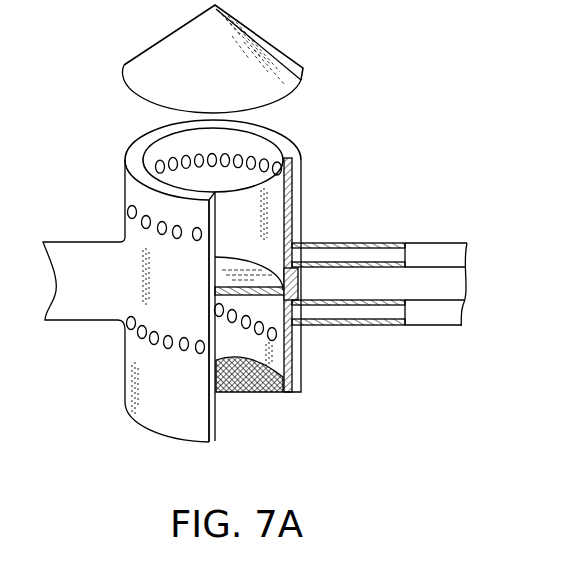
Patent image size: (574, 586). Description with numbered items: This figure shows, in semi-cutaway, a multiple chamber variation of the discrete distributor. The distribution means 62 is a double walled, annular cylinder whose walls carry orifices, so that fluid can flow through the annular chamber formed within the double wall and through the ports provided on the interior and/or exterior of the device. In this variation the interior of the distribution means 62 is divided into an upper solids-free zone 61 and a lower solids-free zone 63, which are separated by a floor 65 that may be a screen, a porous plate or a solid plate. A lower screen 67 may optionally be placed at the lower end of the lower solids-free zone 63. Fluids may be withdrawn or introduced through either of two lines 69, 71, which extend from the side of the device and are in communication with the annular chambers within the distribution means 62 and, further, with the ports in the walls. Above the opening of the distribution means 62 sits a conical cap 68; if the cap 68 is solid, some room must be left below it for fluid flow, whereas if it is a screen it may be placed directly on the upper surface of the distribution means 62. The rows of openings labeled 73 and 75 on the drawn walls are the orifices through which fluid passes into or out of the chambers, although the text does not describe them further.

The upper solids-free zone 61 is at (259, 228).
The distribution means 62 is at (342, 176).
The lower solids-free zone 63 is at (265, 362).
The floor 65 is at (262, 273).
The lower screen 67 is at (261, 393).
The cap 68 is at (268, 44).
The line 69 is at (388, 311).
The line 71 is at (392, 256).
The upper row of apertures 73 is at (262, 170).
The lower row of apertures 75 is at (240, 318).